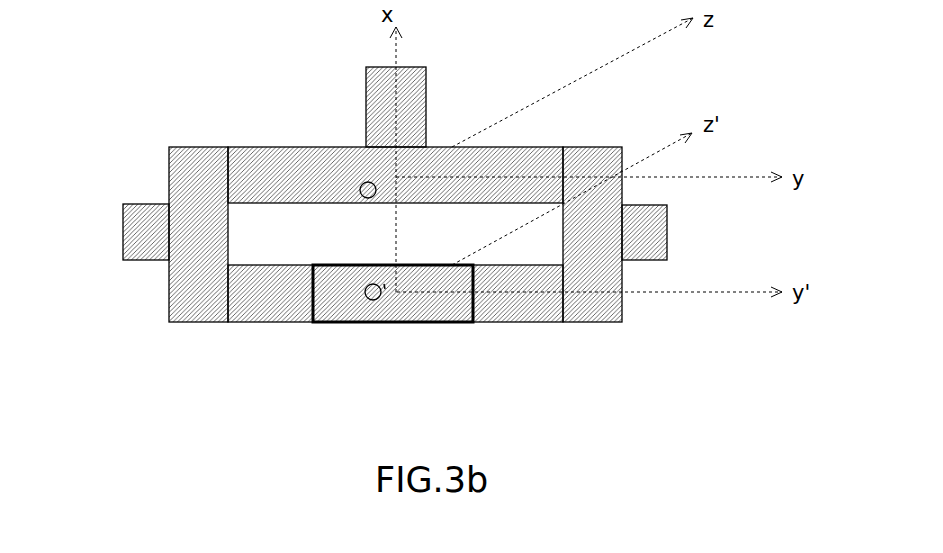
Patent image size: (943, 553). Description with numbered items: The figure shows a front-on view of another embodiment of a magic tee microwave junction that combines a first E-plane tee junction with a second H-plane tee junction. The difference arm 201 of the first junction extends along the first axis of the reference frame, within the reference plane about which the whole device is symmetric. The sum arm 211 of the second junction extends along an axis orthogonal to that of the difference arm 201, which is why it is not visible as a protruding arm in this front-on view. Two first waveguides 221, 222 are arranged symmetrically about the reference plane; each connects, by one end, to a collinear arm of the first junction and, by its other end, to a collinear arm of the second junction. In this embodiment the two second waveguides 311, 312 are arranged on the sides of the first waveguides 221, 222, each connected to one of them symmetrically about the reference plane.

The difference arm 201 is at (426, 100).
The sum arm 211 is at (353, 323).
The first waveguide 221 is at (195, 145).
The first waveguide 222 is at (615, 147).
The second waveguide 311 is at (148, 200).
The second waveguide 312 is at (675, 225).